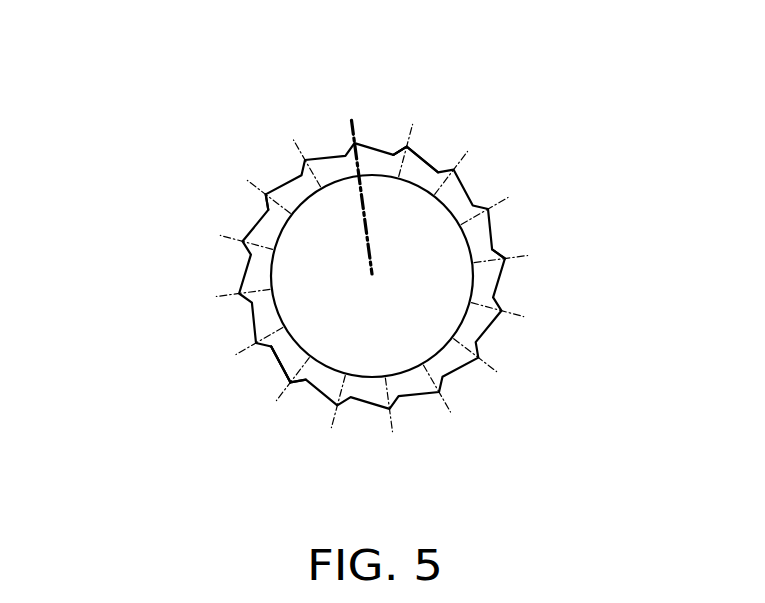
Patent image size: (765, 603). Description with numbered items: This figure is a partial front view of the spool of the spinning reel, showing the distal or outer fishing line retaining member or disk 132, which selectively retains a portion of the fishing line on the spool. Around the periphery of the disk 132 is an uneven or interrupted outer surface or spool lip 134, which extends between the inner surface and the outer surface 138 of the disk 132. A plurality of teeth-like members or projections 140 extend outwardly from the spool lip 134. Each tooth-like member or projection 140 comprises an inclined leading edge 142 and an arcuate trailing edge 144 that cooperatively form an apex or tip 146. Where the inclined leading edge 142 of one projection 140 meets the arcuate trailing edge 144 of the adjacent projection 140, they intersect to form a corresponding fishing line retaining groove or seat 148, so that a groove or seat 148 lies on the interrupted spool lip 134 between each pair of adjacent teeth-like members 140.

The distal or outer fishing line retaining member or disk 132 is at (478, 457).
The interrupted outer surface or spool lip 134 is at (247, 275).
The outer surface 138 is at (413, 310).
The teeth-like members or projections 140 is at (247, 140).
The inclined leading edge 142 is at (393, 153).
The arcuate trailing edge 144 is at (425, 157).
The apex or tip 146 is at (408, 144).
The fishing line retaining groove or seat 148 is at (270, 210).